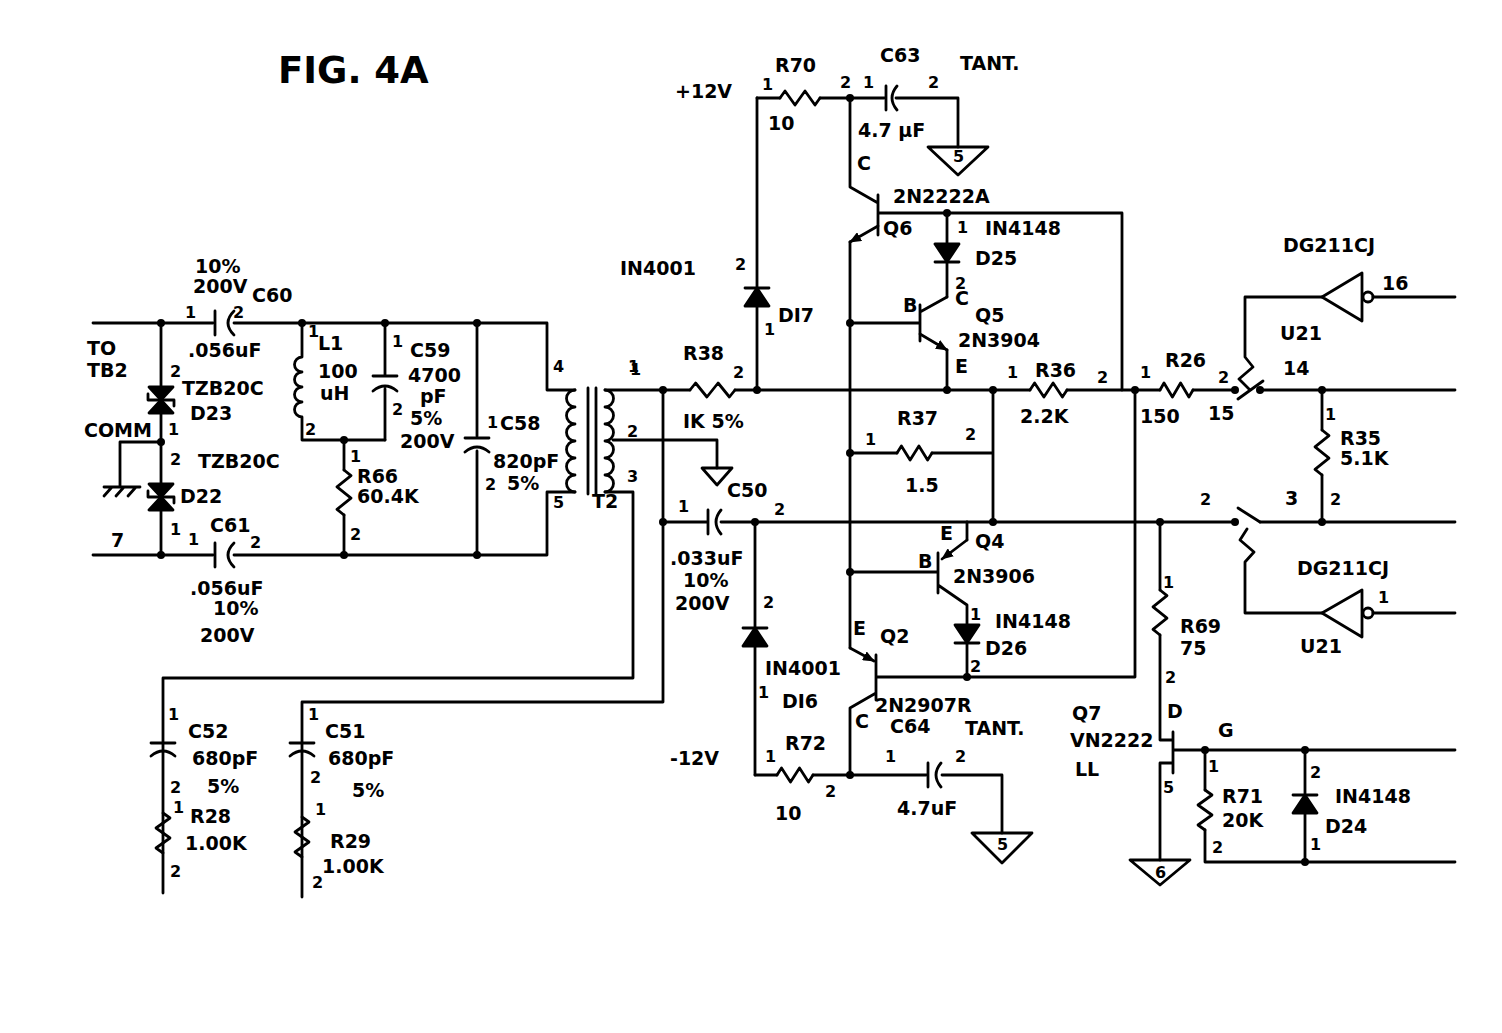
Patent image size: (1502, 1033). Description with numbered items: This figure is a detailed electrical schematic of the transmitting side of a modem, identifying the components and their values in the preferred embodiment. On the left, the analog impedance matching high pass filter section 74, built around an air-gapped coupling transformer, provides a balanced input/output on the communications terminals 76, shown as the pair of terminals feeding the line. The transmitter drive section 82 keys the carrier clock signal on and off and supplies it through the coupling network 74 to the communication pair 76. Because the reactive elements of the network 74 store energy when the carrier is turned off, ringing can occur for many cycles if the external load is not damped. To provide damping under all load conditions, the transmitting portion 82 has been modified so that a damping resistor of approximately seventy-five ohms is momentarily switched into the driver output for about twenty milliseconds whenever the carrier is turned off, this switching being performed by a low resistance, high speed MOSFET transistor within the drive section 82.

The communications terminals 76 is at (124, 298).
The analog impedance matching high pass filter section 74 is at (388, 316).
The transmitter drive section 82 is at (1092, 858).